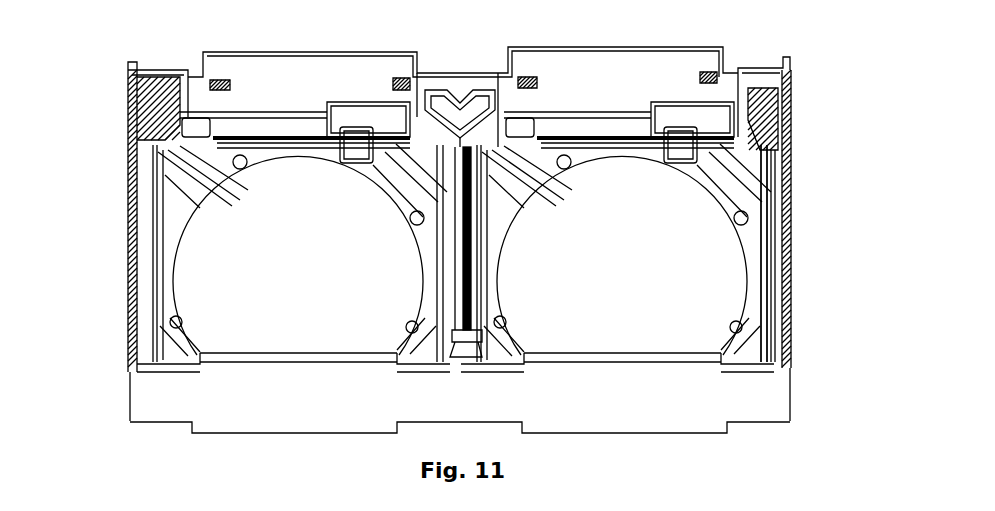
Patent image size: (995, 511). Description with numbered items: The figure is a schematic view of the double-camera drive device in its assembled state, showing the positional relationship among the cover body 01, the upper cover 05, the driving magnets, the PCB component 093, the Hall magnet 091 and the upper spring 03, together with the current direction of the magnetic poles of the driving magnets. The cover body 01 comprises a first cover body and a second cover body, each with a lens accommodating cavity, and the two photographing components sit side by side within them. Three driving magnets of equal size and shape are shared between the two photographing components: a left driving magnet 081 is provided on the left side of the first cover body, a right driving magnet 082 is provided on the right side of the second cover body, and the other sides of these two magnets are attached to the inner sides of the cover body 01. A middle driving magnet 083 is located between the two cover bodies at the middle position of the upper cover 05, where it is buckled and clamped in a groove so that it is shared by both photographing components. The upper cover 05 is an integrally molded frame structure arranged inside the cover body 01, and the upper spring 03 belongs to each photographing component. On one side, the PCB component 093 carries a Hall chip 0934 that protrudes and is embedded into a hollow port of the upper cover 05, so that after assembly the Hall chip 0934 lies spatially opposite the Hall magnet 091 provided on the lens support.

The cover body 01 is at (424, 247).
The upper spring 03 is at (816, 256).
The upper cover 05 is at (798, 103).
The left driving magnet 081 is at (147, 223).
The right driving magnet 082 is at (772, 260).
The middle driving magnet 083 is at (462, 285).
The Hall magnet 091 is at (357, 152).
The PCB component 093 is at (253, 67).
The Hall chip 0934 is at (353, 110).